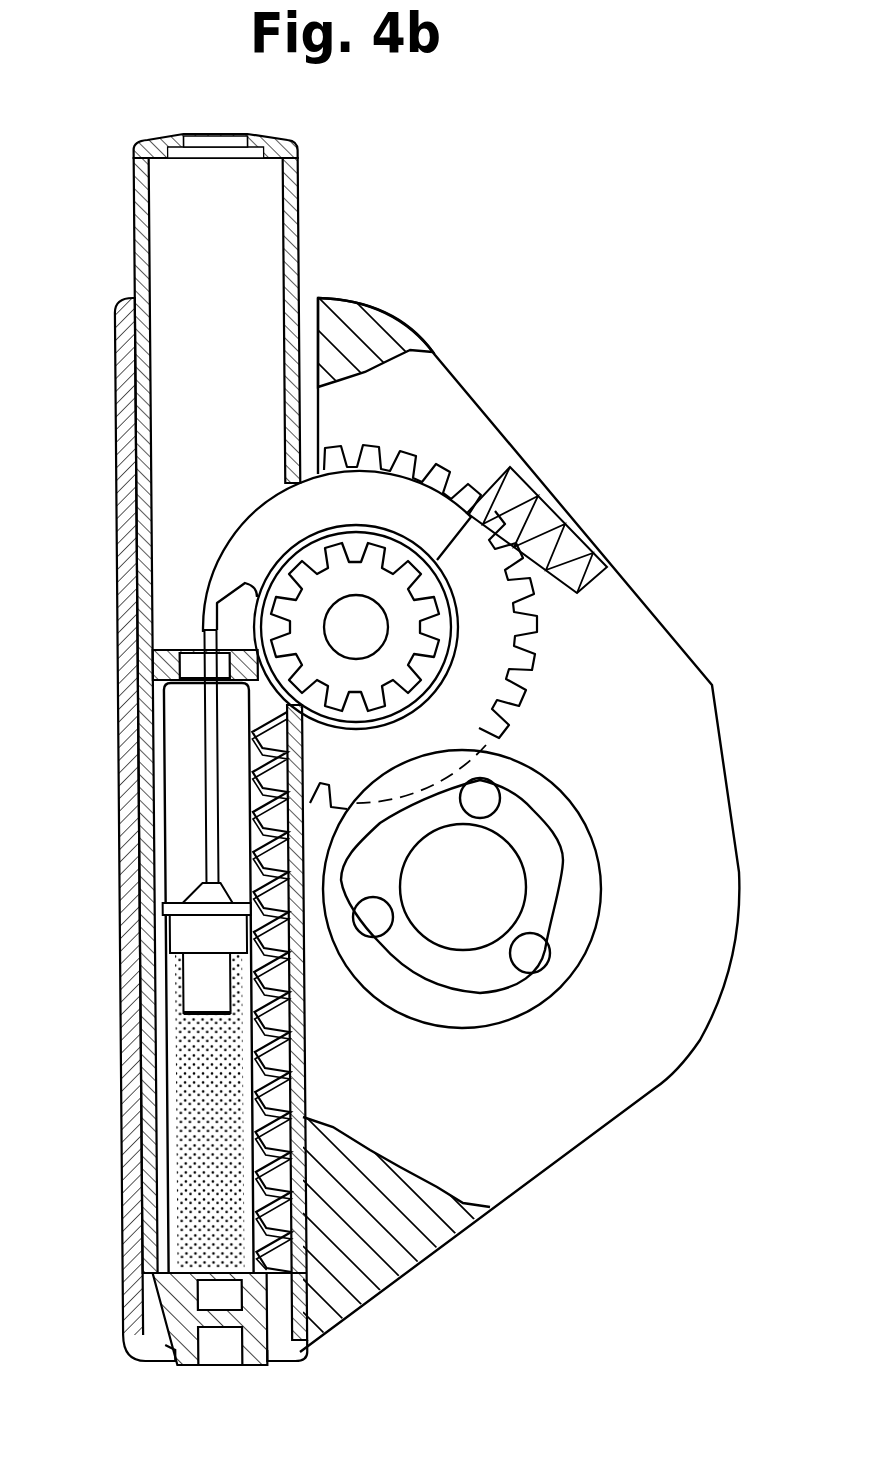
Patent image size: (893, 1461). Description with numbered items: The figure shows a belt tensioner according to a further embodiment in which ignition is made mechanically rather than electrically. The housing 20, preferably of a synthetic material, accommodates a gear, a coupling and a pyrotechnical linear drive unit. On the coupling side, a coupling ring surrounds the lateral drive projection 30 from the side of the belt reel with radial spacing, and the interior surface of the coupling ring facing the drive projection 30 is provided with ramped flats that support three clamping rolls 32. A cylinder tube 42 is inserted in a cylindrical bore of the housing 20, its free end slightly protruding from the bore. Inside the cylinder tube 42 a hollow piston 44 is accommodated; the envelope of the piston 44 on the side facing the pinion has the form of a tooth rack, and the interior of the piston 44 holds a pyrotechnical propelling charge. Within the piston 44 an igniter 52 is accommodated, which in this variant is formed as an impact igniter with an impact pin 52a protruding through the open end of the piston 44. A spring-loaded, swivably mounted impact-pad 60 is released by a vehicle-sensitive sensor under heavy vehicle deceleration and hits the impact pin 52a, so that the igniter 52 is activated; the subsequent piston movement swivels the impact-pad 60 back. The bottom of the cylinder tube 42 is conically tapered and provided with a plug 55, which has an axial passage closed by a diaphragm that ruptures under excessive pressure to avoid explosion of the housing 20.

The housing 20 is at (510, 1142).
The drive projection 30 is at (475, 893).
The clamping rolls 32 is at (535, 958).
The cylinder tube 42 is at (135, 233).
The piston 44 is at (153, 850).
The igniter 52 is at (190, 929).
The impact pin 52a is at (210, 730).
The plug 55 is at (173, 1352).
The impact-pad 60 is at (417, 505).